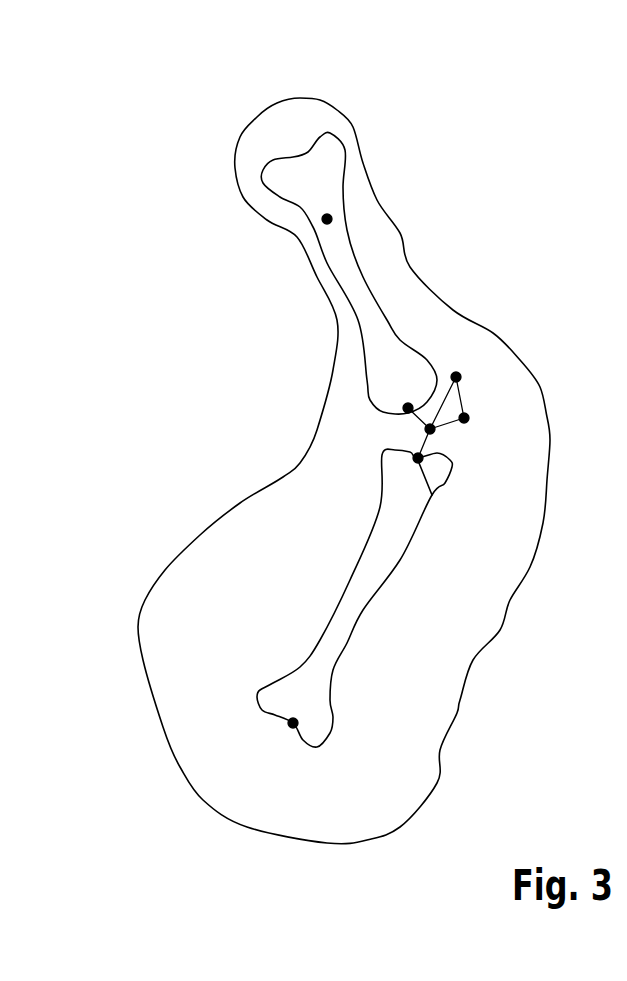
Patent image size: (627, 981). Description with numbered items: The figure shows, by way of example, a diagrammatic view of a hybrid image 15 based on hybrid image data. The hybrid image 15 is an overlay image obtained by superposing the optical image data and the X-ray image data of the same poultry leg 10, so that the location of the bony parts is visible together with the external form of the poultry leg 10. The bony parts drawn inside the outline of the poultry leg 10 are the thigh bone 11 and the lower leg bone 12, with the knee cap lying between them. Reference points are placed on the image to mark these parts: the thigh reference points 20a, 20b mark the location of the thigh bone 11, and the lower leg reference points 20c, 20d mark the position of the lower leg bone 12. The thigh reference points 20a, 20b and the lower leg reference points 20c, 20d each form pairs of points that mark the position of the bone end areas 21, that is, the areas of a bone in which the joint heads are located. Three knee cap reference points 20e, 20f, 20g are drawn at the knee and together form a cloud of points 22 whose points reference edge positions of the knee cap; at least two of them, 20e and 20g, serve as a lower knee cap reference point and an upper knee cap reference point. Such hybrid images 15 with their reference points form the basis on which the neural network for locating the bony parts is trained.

The poultry leg 10 is at (515, 133).
The thigh bone 11 is at (387, 550).
The lower leg bone 12 is at (353, 270).
The hybrid image 15 is at (130, 176).
The bone end areas 21 is at (303, 122).
The cloud of points 22 is at (380, 440).
The thigh reference point 20a is at (293, 723).
The thigh reference point 20b is at (432, 495).
The lower leg reference point 20c is at (405, 413).
The lower leg reference point 20d is at (327, 219).
The knee cap reference point 20e is at (430, 430).
The knee cap reference point 20f is at (464, 418).
The knee cap reference point 20g is at (456, 377).